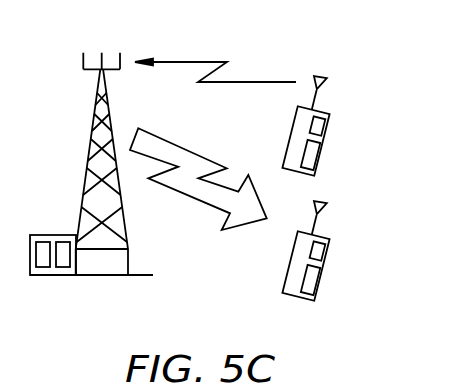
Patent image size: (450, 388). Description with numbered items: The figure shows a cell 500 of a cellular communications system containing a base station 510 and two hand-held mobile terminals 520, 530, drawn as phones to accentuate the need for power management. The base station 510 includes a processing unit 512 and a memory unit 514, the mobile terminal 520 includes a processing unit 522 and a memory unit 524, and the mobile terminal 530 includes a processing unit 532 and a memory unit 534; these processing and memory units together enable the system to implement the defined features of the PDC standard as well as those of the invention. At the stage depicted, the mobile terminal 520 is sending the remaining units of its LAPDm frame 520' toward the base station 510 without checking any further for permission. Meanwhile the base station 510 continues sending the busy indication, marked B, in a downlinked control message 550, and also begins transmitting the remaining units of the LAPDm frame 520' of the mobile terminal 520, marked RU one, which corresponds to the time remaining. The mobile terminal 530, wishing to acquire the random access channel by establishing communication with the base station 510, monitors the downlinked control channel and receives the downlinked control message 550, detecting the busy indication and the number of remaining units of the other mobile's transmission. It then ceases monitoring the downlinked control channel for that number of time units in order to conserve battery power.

The cell 500 is at (364, 60).
The base station 510 is at (83, 202).
The processing unit 512 is at (42, 268).
The memory unit 514 is at (61, 268).
The mobile terminal 520 is at (332, 124).
The LAPDm frame 520' is at (215, 72).
The processing unit 522 is at (322, 134).
The memory unit 524 is at (313, 163).
The mobile terminal 530 is at (322, 236).
The processing unit 532 is at (322, 259).
The memory unit 534 is at (313, 288).
The downlinked control message 550 is at (186, 150).